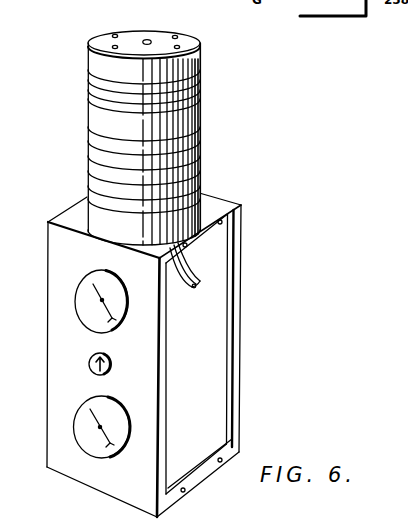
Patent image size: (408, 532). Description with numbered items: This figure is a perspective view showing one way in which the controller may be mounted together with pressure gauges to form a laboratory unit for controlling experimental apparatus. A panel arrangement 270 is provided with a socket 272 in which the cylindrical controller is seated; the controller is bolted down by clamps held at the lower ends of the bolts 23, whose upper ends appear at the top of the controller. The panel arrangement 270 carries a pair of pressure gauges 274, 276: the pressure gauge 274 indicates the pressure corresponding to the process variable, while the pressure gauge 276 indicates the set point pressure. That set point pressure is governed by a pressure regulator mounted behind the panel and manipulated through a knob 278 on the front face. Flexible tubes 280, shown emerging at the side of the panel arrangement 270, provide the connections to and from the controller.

The bolts 23 is at (117, 45).
The panel arrangement 270 is at (165, 318).
The socket 272 is at (78, 231).
The pressure gauge 274 is at (100, 283).
The pressure gauge 276 is at (116, 414).
The knob 278 is at (111, 357).
The flexible tubes 280 is at (195, 278).